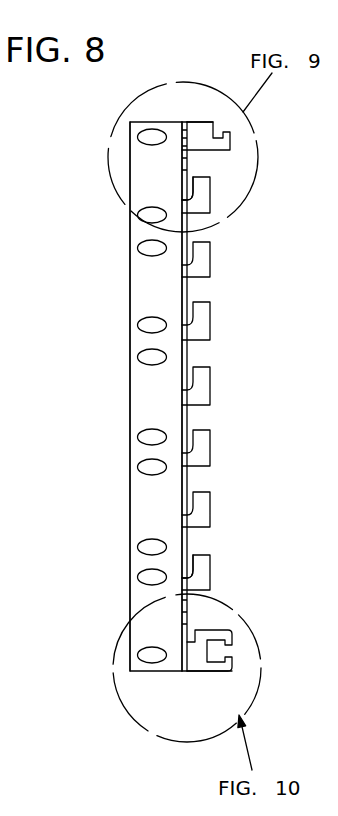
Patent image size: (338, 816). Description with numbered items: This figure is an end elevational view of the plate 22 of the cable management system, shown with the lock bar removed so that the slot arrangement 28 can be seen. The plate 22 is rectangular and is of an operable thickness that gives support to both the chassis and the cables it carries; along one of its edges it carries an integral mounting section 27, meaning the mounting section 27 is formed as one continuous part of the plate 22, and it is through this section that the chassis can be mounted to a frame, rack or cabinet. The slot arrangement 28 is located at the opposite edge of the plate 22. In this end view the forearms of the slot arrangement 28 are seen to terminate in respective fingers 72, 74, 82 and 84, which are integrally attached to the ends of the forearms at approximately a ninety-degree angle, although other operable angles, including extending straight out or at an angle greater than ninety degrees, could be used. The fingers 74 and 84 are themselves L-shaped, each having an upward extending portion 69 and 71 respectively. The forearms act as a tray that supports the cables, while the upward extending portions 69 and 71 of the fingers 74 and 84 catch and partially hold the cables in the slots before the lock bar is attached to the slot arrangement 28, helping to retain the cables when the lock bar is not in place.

The slot arrangement 28 is at (248, 363).
The mounting section 27 is at (130, 417).
The plate 22 is at (185, 122).
The finger 72 is at (200, 122).
The upward extending portion 69 is at (209, 196).
The finger 74 is at (208, 182).
The upward extending portion 71 is at (211, 568).
The finger 84 is at (201, 555).
The finger 82 is at (205, 672).